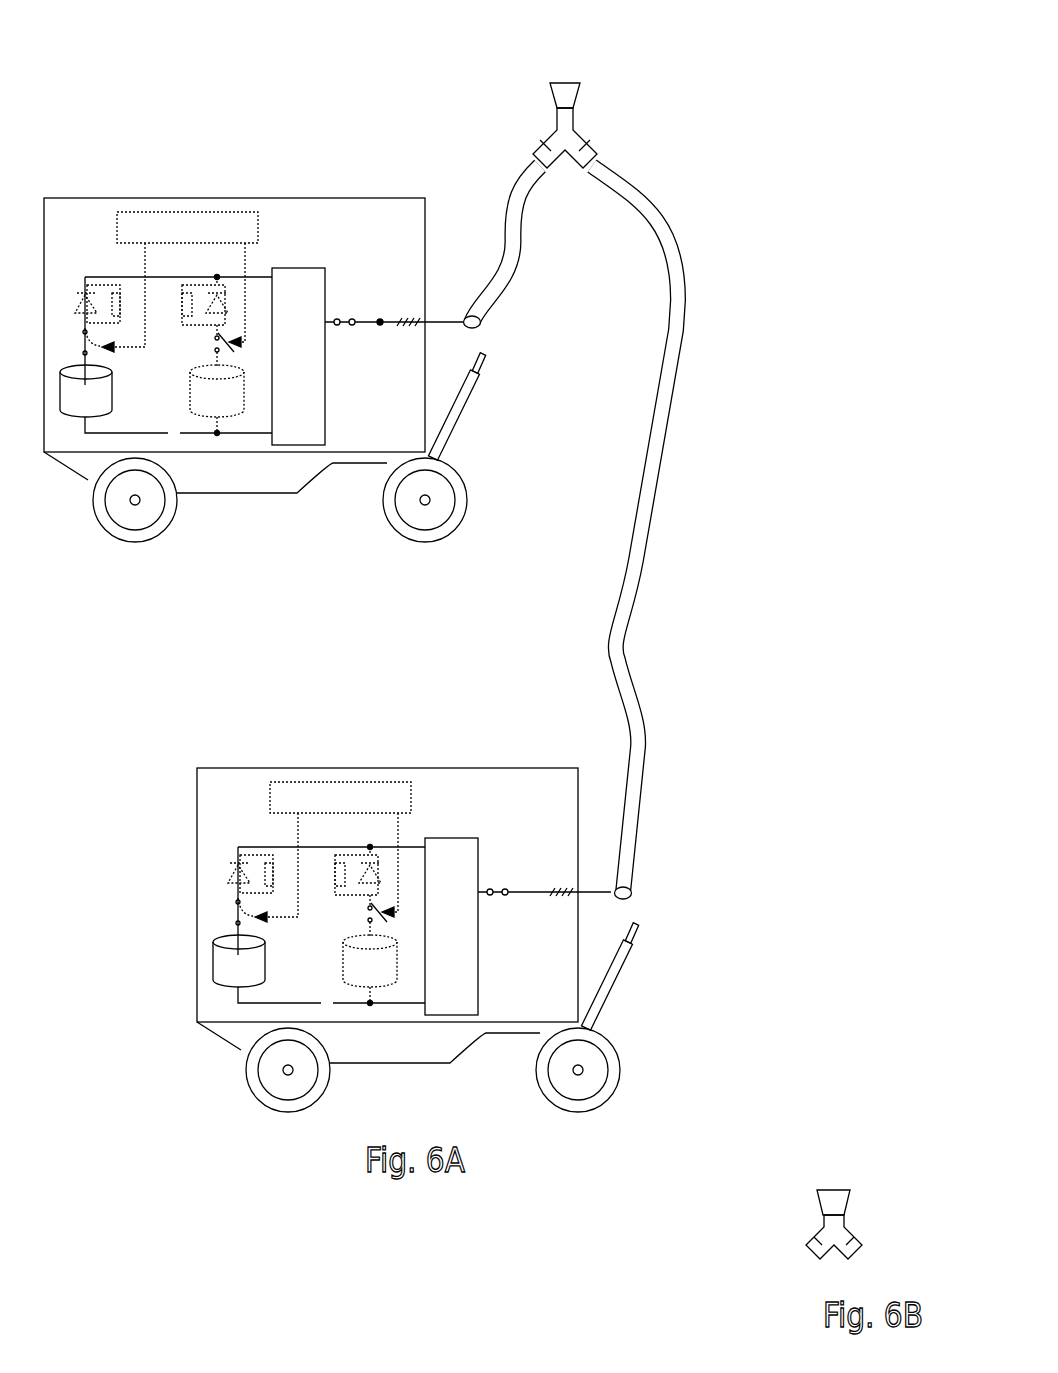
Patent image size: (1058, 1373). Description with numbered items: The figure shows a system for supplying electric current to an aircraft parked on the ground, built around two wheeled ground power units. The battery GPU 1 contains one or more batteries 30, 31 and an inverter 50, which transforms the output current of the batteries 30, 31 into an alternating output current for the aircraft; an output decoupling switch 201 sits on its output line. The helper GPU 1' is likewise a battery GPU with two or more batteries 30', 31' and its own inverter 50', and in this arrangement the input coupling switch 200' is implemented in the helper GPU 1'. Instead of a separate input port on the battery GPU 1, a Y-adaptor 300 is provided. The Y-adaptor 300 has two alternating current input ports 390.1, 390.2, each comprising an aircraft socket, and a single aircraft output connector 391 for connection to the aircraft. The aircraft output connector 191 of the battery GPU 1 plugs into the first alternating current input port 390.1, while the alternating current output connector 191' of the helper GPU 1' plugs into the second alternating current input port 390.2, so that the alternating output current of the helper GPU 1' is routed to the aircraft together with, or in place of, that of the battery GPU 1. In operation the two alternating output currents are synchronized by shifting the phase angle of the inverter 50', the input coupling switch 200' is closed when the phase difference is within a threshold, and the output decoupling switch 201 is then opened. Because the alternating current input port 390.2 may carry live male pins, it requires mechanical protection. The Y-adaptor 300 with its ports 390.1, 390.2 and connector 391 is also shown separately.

In FIG. 6A, the battery GPU 1 is at (265, 332).
In FIG. 6A, the helper GPU 1' is at (418, 902).
In FIG. 6A, the battery 30 is at (106, 400).
In FIG. 6A, the battery 30' is at (262, 970).
In FIG. 6A, the battery 31 is at (192, 391).
In FIG. 6A, the battery 31' is at (345, 961).
In FIG. 6A, the inverter 50 is at (298, 339).
In FIG. 6A, the inverter 50' is at (451, 909).
In FIG. 6A, the output decoupling switch 201 is at (337, 318).
In FIG. 6A, the input coupling switch 200' is at (544, 849).
In FIG. 6A, the aircraft output connector 191 is at (471, 239).
In FIG. 6A, the alternating current output connector 191' is at (673, 508).
In FIG. 6A, the Y-adaptor 300 is at (580, 118).
In FIG. 6B, the Y-adaptor 300 is at (845, 1230).
In FIG. 6A, the aircraft output connector 391 is at (575, 83).
In FIG. 6B, the aircraft output connector 391 is at (835, 1192).
In FIG. 6A, the alternating current input port 390.1 is at (552, 130).
In FIG. 6B, the alternating current input port 390.1 is at (823, 1240).
In FIG. 6A, the alternating current input port 390.2 is at (596, 133).
In FIG. 6B, the alternating current input port 390.2 is at (853, 1240).